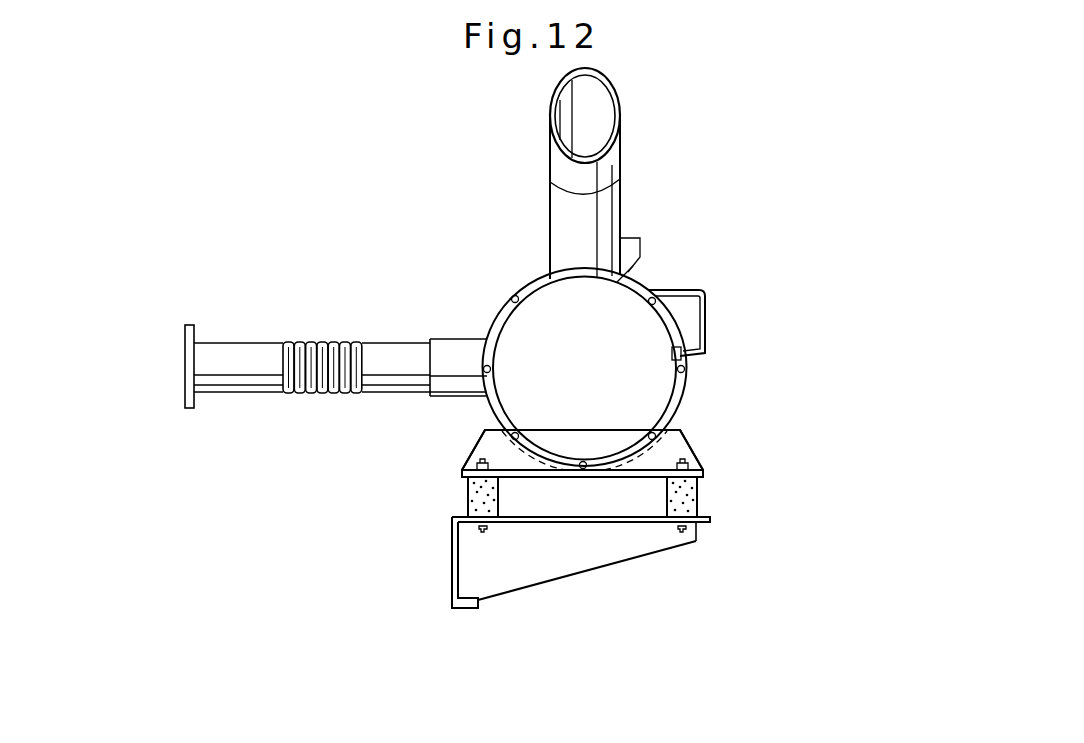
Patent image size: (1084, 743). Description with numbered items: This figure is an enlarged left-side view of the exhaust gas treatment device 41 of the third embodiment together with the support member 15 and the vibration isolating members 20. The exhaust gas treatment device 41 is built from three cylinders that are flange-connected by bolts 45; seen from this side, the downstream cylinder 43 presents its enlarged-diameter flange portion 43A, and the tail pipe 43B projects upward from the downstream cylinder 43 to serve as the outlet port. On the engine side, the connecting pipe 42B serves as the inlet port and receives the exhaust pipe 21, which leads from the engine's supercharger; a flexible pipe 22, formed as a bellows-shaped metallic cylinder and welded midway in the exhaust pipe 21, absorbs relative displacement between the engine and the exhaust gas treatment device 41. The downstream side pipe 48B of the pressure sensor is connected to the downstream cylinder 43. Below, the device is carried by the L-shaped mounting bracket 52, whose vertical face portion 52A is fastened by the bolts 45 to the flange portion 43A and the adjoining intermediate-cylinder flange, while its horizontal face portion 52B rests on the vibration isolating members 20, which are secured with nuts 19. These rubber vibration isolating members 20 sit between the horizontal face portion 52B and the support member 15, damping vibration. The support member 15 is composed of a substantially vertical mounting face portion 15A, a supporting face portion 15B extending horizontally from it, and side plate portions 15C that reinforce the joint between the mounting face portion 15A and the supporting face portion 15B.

The exhaust gas treatment device 41 is at (533, 272).
The downstream cylinder 43 is at (610, 325).
The flange portion 43A is at (490, 318).
The tail pipe 43B is at (607, 173).
The connecting pipe 42B is at (457, 355).
The bolts 45 is at (513, 296).
The downstream side pipe 48B is at (710, 312).
The exhaust pipe 21 is at (237, 360).
The flexible pipe 22 is at (325, 345).
The mounting bracket 52 is at (677, 452).
The vertical face portion 52A is at (487, 432).
The horizontal face portion 52B is at (475, 453).
The nuts 19 is at (696, 468).
The vibration isolating members 20 is at (697, 497).
The support member 15 is at (548, 569).
The mounting face portion 15A is at (452, 565).
The supporting face portion 15B is at (640, 523).
The side plate portions 15C is at (520, 560).